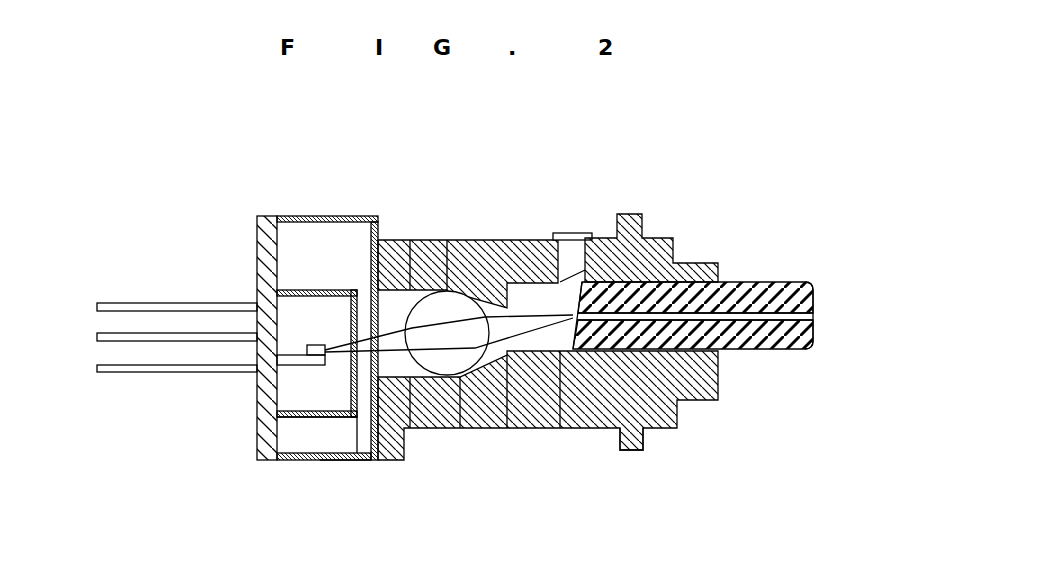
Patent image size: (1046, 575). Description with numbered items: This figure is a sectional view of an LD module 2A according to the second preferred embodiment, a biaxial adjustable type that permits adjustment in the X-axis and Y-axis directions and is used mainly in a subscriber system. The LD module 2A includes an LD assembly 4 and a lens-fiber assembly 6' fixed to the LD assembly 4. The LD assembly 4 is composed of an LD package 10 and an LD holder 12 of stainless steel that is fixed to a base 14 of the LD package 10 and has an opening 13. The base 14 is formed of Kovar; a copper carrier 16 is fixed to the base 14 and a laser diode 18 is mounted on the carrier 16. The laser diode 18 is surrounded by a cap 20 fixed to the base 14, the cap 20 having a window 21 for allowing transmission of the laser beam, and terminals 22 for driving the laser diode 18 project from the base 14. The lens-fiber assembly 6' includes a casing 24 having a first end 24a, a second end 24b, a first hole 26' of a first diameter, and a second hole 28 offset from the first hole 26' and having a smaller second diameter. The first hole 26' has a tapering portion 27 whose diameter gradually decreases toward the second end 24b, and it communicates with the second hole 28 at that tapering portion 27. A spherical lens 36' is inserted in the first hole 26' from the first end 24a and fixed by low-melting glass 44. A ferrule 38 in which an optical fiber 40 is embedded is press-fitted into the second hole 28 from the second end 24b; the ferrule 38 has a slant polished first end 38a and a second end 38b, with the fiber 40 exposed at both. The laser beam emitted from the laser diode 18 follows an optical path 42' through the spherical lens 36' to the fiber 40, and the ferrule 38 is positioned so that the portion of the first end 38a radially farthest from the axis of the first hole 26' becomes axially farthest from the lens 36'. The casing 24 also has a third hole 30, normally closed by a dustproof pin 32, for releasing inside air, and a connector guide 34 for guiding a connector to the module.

The LD module 2A is at (490, 236).
The LD assembly 4 is at (318, 214).
The lens-fiber assembly 6' is at (651, 221).
The LD package 10 is at (304, 421).
The LD holder 12 is at (362, 460).
The opening 13 is at (387, 460).
The base 14 is at (258, 450).
The carrier 16 is at (320, 365).
The laser diode 18 is at (318, 345).
The cap 20 is at (283, 289).
The window 21 is at (348, 460).
The terminals 22 is at (122, 303).
The casing 24 is at (588, 428).
The first end 24a is at (369, 240).
The second end 24b is at (718, 395).
The first hole 26' is at (436, 446).
The tapering portion 27 is at (505, 428).
The second hole 28 is at (538, 340).
The third hole 30 is at (570, 268).
The dustproof pin 32 is at (587, 233).
The connector guide 34 is at (632, 450).
The spherical lens 36' is at (447, 270).
The ferrule 38 is at (785, 282).
The first end 38a is at (573, 346).
The second end 38b is at (818, 333).
The optical fiber 40 is at (780, 320).
The lens holder portion 42' is at (469, 420).
The low-melting glass 44 is at (411, 252).